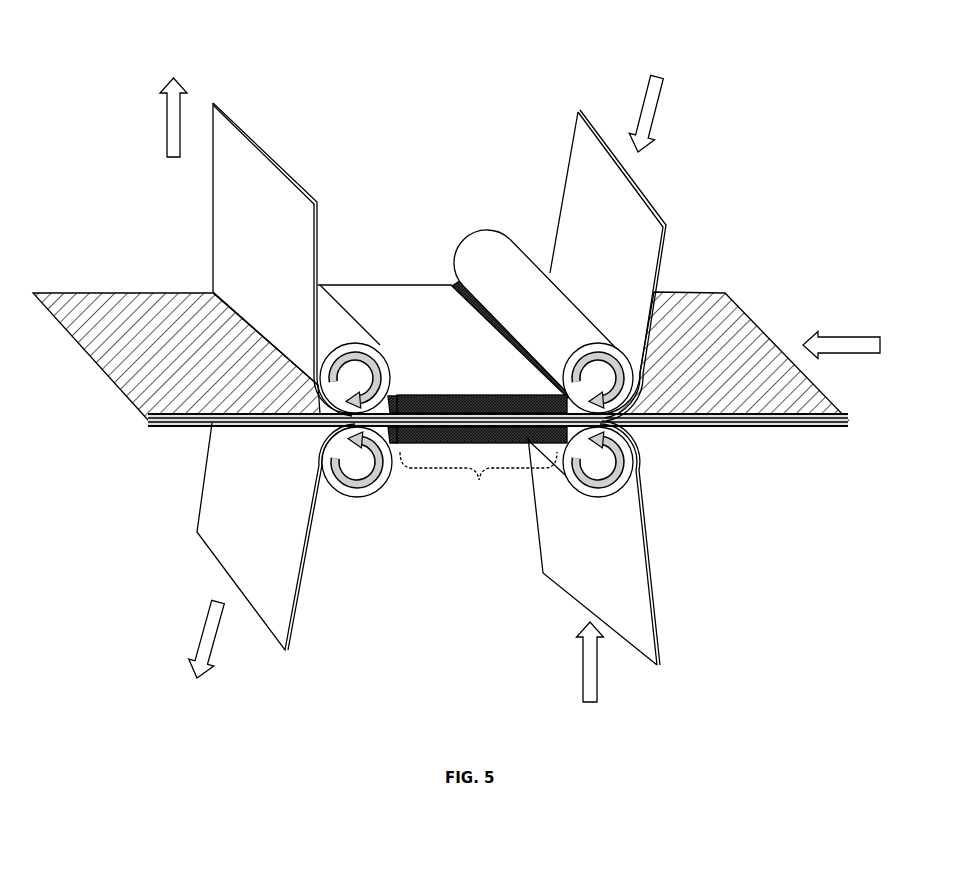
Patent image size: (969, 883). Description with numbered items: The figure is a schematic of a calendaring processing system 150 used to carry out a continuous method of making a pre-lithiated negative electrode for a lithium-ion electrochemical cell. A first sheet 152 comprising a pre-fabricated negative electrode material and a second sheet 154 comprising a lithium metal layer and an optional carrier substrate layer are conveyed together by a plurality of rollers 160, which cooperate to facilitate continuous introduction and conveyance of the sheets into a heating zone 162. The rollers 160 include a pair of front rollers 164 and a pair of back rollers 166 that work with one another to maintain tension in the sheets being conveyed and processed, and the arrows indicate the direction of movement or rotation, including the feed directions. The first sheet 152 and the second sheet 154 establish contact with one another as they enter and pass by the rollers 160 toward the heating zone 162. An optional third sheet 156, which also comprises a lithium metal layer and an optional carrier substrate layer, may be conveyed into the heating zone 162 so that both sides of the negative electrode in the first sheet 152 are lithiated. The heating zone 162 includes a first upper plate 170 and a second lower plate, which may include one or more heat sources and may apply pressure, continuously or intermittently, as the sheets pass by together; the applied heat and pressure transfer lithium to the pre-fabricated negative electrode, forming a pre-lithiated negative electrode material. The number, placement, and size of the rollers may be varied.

The calendaring processing system 150 is at (192, 40).
The first sheet 152 is at (737, 310).
The second sheet 154 is at (638, 197).
The third sheet 156 is at (652, 580).
The rollers 160 is at (338, 313).
The heating zone 162 is at (478, 477).
The front rollers 164 is at (482, 232).
The back rollers 166 is at (330, 313).
The first upper plate 170 is at (157, 293).